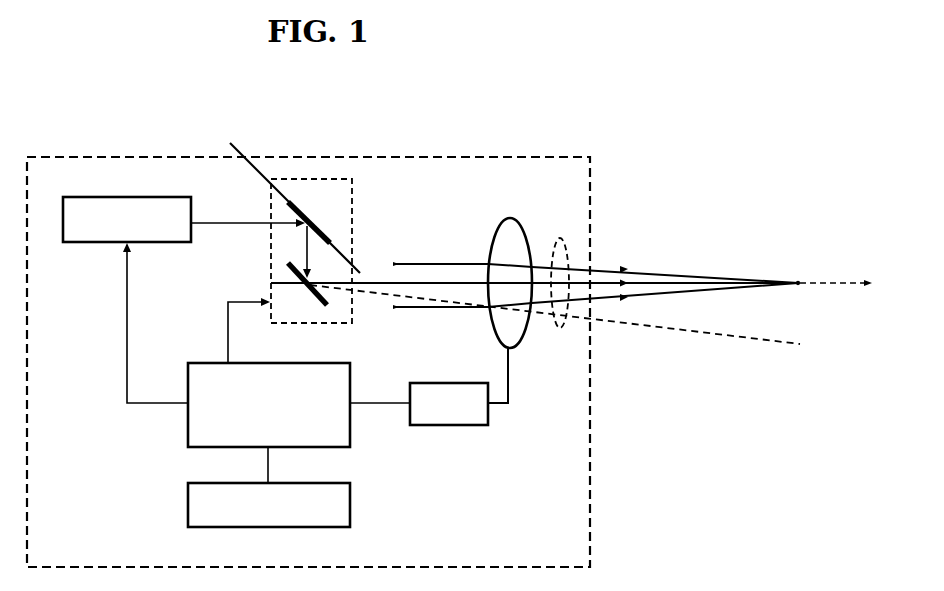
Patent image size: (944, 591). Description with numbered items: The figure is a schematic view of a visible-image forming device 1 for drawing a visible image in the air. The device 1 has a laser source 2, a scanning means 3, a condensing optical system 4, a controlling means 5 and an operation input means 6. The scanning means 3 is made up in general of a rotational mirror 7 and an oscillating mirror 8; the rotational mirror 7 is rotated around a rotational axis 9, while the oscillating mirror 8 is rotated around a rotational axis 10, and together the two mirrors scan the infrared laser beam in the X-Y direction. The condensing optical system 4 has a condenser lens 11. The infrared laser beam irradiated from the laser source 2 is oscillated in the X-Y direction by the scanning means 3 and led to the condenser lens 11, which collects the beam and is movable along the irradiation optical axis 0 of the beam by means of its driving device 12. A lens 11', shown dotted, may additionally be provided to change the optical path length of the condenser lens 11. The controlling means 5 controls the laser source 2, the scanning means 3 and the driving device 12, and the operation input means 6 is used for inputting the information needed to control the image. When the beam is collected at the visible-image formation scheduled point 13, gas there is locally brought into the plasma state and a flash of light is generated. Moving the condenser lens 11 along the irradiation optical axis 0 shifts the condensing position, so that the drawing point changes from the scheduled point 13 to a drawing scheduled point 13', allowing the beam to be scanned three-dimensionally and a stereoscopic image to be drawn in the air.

The visible-image forming device 1 is at (418, 158).
The laser source 2 is at (126, 197).
The scanning means 3 is at (320, 179).
The condensing optical system 4 is at (533, 219).
The controlling means 5 is at (352, 424).
The operation input means 6 is at (295, 523).
The rotational mirror 7 is at (323, 226).
The oscillating mirror 8 is at (312, 297).
The rotational axis 9 is at (258, 170).
The rotational axis 10 is at (273, 281).
The irradiation optical axis 0 is at (430, 284).
The condenser lens 11 is at (533, 368).
The lens 11' is at (602, 261).
The driving device 12 is at (450, 420).
The visible-image formation scheduled point 13 is at (784, 255).
The drawing scheduled point 13' is at (850, 255).